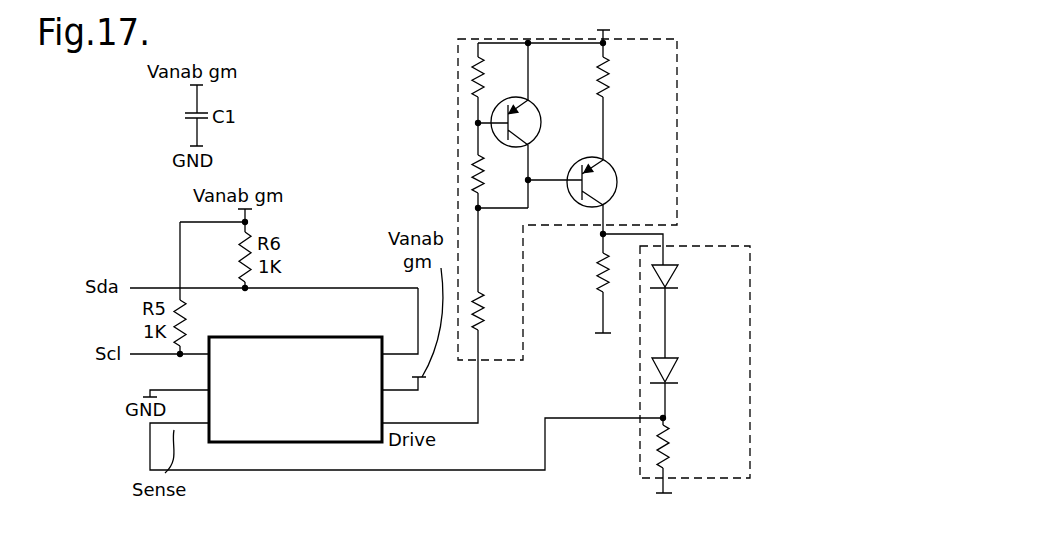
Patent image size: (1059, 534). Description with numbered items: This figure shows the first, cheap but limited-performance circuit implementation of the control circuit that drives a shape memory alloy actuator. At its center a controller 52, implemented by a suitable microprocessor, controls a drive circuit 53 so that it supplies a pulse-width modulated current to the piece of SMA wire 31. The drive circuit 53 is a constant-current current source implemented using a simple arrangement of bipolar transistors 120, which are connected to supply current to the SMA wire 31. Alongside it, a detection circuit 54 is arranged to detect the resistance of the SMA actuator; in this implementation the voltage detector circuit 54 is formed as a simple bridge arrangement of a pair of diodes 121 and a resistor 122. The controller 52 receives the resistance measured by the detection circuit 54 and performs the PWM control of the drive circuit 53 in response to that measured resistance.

The piece of SMA wire 31 is at (605, 282).
The controller 52 is at (326, 347).
The drive circuit 53 is at (678, 58).
The detection circuit 54 is at (702, 480).
The bipolar transistors 120 is at (518, 108).
The diodes 121 is at (672, 265).
The resistor 122 is at (658, 462).